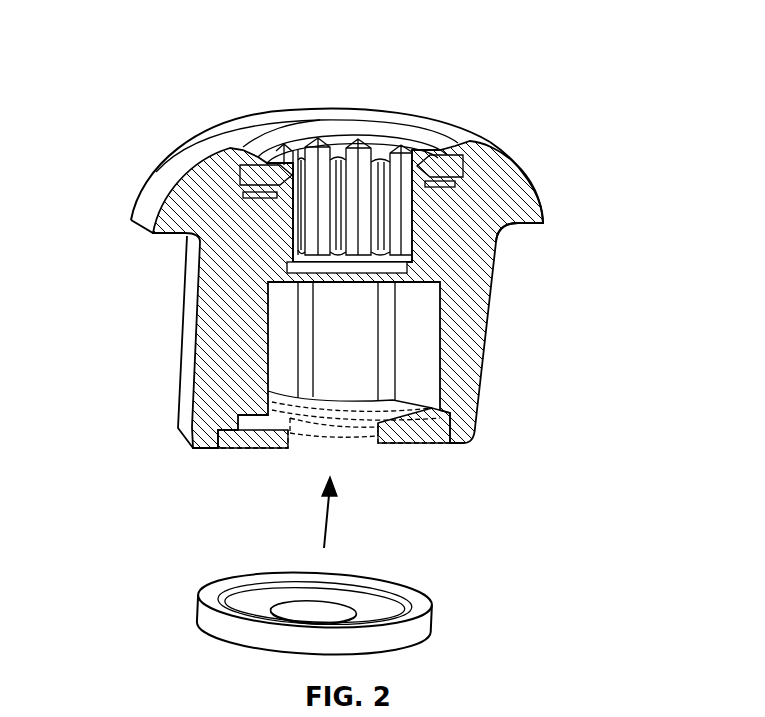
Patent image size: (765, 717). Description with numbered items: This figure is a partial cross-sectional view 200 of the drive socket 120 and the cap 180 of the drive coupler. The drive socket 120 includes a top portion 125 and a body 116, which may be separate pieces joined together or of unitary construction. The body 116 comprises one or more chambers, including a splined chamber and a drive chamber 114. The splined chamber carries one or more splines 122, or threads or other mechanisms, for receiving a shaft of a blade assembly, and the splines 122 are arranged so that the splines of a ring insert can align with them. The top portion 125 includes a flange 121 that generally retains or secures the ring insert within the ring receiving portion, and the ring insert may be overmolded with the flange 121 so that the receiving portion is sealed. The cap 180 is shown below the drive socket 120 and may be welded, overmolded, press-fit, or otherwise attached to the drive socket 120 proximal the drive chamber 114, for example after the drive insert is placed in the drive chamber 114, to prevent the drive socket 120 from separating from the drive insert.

The partial cross-sectional view 200 is at (505, 92).
The drive socket 120 is at (152, 188).
The flange 121 is at (417, 158).
The splines 122 is at (398, 218).
The top portion 125 is at (543, 207).
The body 116 is at (227, 310).
The drive chamber 114 is at (315, 445).
The cap 180 is at (417, 630).